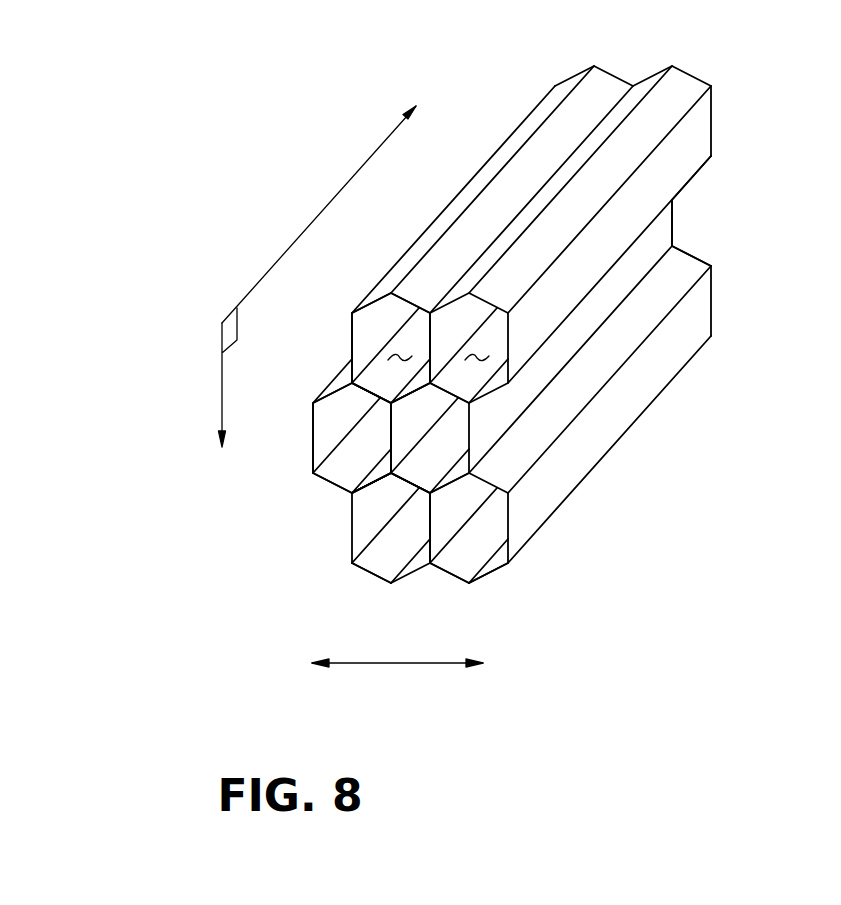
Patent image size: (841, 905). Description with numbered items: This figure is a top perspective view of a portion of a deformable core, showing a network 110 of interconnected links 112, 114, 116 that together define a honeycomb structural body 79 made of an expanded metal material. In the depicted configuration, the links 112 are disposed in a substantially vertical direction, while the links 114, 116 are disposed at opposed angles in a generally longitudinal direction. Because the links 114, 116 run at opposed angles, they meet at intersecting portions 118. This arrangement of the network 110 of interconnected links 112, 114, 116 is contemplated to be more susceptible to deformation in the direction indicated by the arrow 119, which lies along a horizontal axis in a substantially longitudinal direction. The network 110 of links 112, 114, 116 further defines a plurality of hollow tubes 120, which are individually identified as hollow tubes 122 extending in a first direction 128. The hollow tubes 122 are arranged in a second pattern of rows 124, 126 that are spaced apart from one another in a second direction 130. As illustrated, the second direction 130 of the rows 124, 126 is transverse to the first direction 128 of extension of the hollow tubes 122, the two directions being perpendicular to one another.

The honeycomb structural body 79 is at (680, 210).
The network 110 is at (307, 532).
The links 112 is at (313, 416).
The links 114 is at (399, 478).
The links 116 is at (441, 569).
The intersecting portions 118 is at (430, 560).
The arrow 119 is at (412, 665).
The hollow tubes 120 is at (332, 331).
The hollow tubes 122 is at (472, 352).
The row 124 is at (368, 576).
The row 126 is at (481, 581).
The first direction 128 is at (281, 256).
The second direction 130 is at (222, 380).